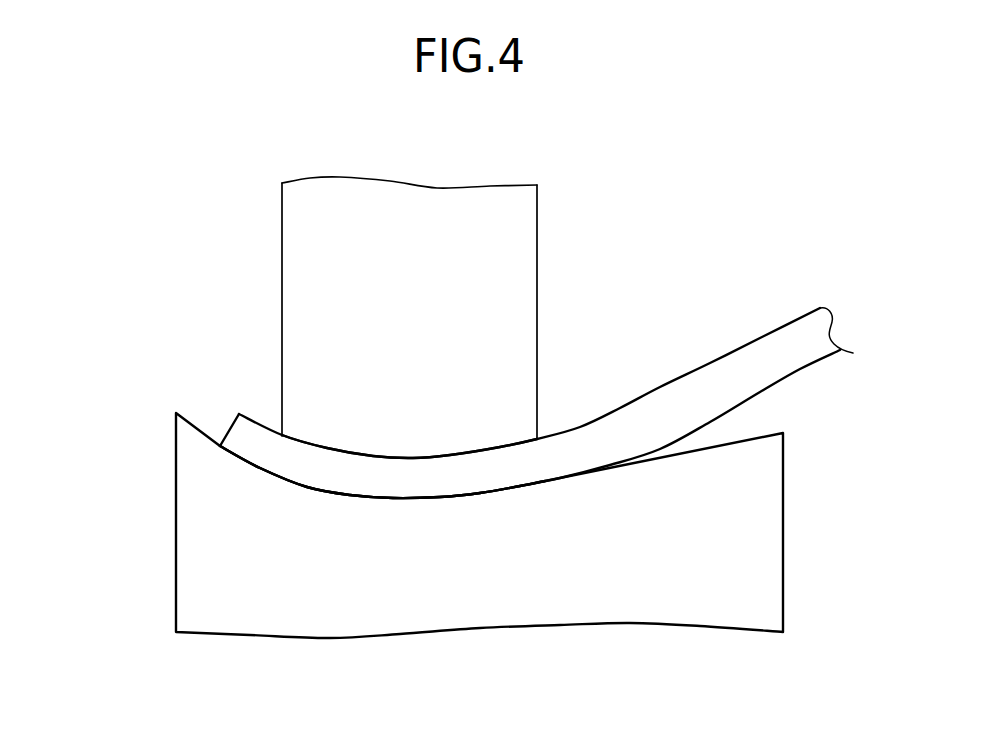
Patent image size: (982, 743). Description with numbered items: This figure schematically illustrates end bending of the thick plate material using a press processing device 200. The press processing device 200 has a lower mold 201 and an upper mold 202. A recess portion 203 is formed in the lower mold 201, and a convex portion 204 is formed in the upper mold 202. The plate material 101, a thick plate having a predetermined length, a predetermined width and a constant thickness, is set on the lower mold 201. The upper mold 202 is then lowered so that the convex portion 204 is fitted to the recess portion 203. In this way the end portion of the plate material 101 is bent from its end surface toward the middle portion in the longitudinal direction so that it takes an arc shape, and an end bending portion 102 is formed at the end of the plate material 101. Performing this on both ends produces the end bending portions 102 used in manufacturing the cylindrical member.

The press processing device 200 is at (170, 251).
The upper mold 202 is at (507, 237).
The convex portion 204 is at (417, 460).
The lower mold 201 is at (563, 578).
The recess portion 203 is at (386, 494).
The plate material 101 is at (705, 402).
The end bending portion 102 is at (239, 414).